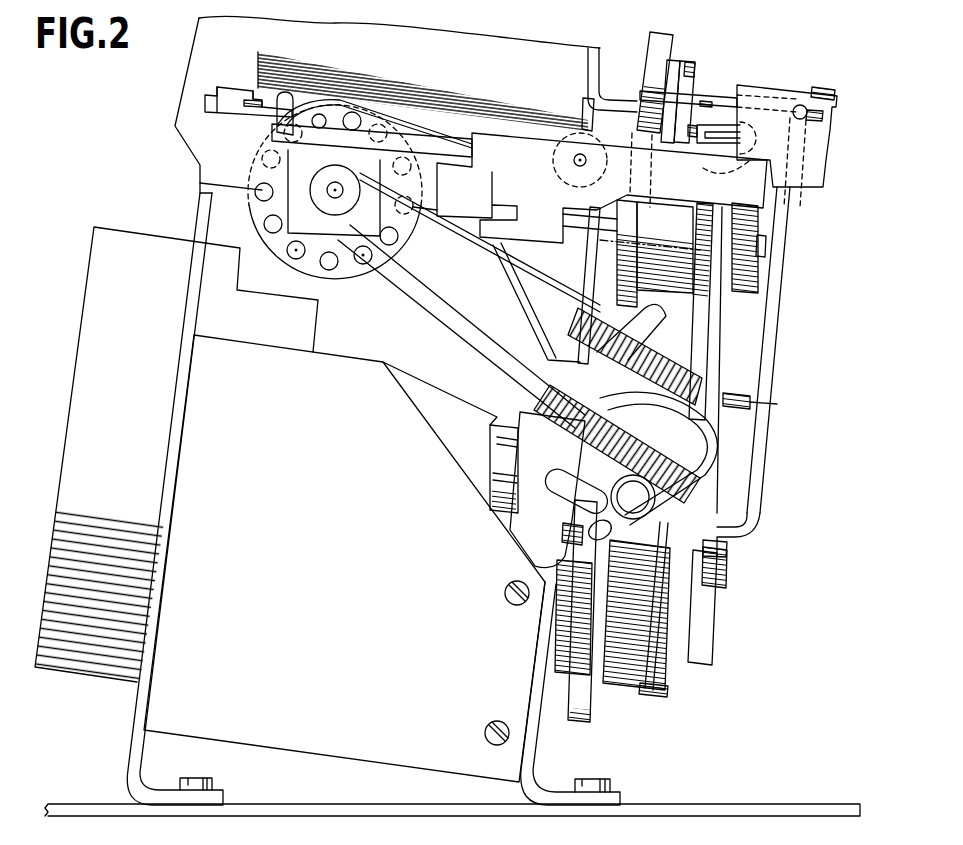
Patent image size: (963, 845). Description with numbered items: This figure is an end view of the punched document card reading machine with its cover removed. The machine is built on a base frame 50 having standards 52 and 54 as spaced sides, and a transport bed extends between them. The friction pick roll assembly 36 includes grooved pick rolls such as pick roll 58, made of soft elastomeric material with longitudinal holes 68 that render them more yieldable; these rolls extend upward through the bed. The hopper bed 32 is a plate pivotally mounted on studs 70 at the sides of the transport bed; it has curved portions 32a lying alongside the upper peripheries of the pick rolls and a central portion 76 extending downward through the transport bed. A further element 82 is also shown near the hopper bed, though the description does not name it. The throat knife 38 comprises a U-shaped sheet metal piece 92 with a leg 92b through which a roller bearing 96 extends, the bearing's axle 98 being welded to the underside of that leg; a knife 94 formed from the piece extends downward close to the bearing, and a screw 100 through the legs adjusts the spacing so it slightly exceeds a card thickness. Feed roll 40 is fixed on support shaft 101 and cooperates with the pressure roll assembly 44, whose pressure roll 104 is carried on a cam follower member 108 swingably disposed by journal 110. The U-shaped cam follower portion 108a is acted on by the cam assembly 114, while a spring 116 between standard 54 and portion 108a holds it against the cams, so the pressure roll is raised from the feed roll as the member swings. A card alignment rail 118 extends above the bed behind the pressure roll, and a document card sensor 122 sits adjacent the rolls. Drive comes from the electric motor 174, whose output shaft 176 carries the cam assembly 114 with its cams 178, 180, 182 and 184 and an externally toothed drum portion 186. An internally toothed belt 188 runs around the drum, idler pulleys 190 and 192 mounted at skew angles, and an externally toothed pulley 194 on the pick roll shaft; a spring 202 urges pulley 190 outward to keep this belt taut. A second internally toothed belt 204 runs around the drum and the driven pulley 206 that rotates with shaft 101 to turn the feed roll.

The hopper bed 32 is at (416, 114).
The curved portions 32a is at (348, 103).
The friction pick roll assembly 36 is at (241, 217).
The throat knife 38 is at (603, 91).
The feed roll 40 is at (640, 209).
The pressure roll assembly 44 is at (784, 339).
The base frame 50 is at (768, 803).
The standard 52 is at (133, 743).
The standard 54 is at (590, 263).
The pick roll 58 is at (343, 268).
The longitudinal holes 68 is at (290, 254).
The studs 70 is at (215, 96).
The central portion 76 is at (520, 297).
The pawl 82 is at (281, 116).
The sheet metal piece 92 is at (757, 145).
The leg 92b is at (706, 173).
The knife 94 is at (587, 112).
The roller bearing 96 is at (560, 172).
The axle 98 is at (553, 158).
The screw 100 is at (711, 100).
The support shaft 101 is at (766, 245).
The pressure roll 104 is at (662, 53).
The cam follower member 108 is at (799, 105).
The U-shaped cam follower portion 108a is at (748, 518).
The journal 110 is at (828, 165).
The cam assembly 114 is at (716, 637).
The spring 116 is at (740, 408).
The card alignment rail 118 is at (690, 70).
The document card sensor 122 is at (692, 143).
The electric motor 174 is at (460, 423).
The output shaft 176 is at (490, 505).
The cam 178 is at (567, 527).
The cam 180 is at (570, 637).
The cam 182 is at (588, 727).
The cam 184 is at (708, 610).
The externally toothed drum portion 186 is at (645, 685).
The internally toothed belt 188 is at (423, 290).
The idler pulley 190 is at (597, 460).
The idler pulley 192 is at (677, 350).
The externally toothed pulley 194 is at (327, 196).
The spring 202 is at (710, 462).
The internally toothed belt 204 is at (673, 697).
The driven pulley 206 is at (752, 269).